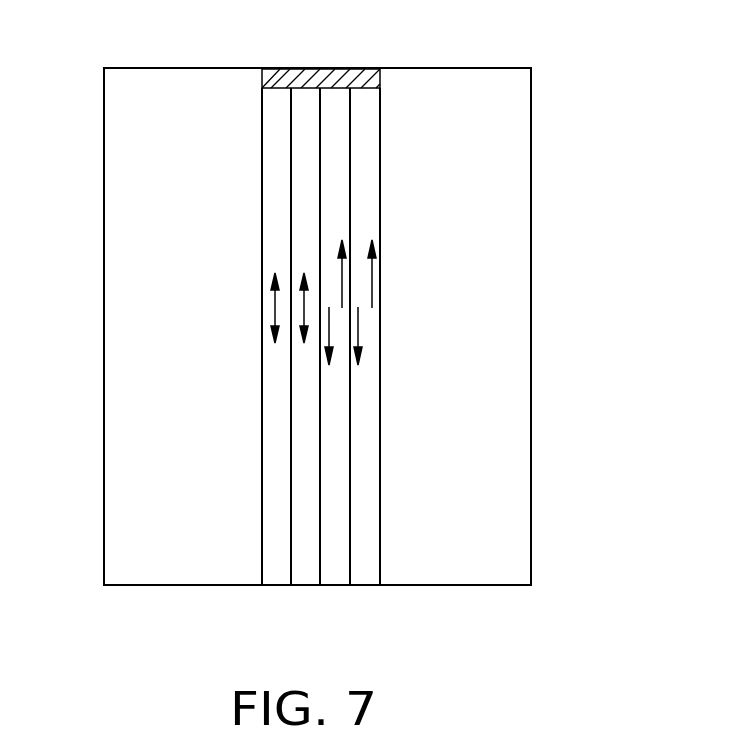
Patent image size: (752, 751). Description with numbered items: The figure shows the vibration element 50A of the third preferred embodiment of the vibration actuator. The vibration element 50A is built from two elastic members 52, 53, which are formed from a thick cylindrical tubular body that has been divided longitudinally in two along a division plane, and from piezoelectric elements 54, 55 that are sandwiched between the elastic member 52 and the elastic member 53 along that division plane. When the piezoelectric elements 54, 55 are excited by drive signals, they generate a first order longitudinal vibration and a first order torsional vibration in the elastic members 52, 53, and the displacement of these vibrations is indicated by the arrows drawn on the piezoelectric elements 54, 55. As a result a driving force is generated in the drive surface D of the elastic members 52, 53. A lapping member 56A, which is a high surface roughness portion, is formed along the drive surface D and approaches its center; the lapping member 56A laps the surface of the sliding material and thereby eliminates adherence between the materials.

The vibration element 50A is at (638, 187).
The elastic member 52 is at (112, 110).
The elastic member 53 is at (524, 90).
The piezoelectric element 54 is at (303, 575).
The piezoelectric element 55 is at (363, 575).
The lapping member 56A is at (320, 78).
The drive surface D is at (470, 67).